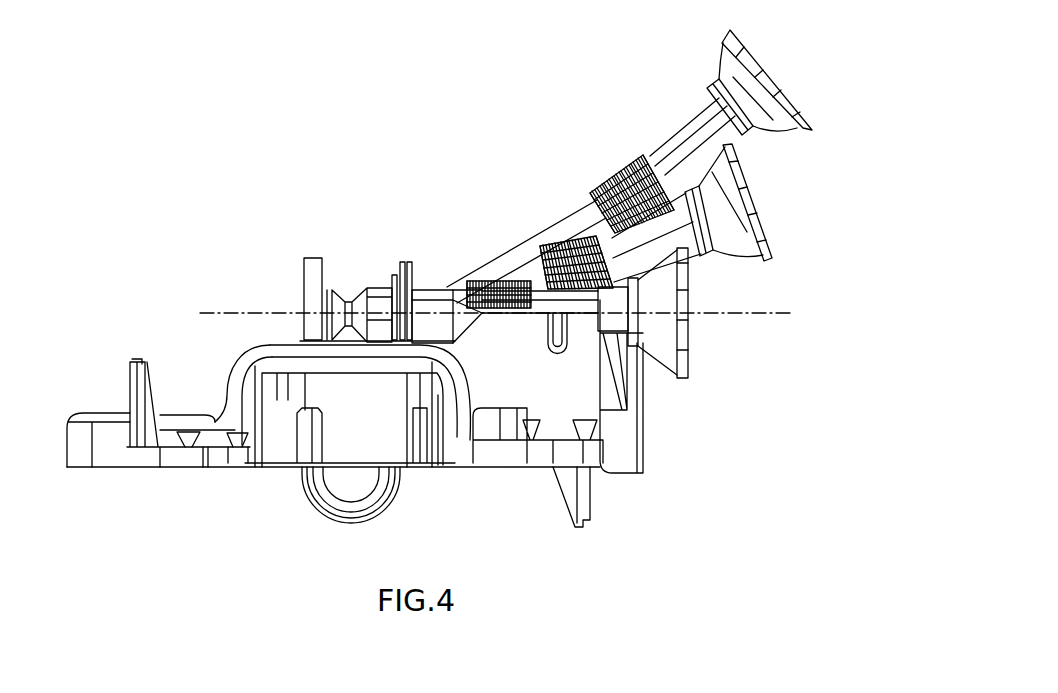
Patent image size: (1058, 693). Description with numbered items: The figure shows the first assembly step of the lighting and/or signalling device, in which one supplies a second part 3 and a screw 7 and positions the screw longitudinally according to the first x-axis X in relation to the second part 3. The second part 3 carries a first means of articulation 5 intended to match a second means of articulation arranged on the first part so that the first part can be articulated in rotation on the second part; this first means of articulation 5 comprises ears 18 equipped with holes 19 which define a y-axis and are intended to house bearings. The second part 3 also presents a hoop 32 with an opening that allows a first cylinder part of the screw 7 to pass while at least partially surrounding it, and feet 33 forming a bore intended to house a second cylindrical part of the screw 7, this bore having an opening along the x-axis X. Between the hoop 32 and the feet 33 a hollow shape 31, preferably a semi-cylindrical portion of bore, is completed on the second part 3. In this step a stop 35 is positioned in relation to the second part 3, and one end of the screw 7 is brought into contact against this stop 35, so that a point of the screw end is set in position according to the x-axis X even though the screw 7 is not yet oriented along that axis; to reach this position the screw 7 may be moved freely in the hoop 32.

The second part 3 is at (155, 470).
The first means of articulation 5 is at (359, 514).
The screw 7 is at (604, 204).
The ears 18 is at (397, 478).
The holes 19 is at (343, 493).
The hollow shape 31 is at (504, 343).
The hoop 32 is at (388, 268).
The feet 33 is at (585, 332).
The stop 35 is at (303, 296).
The x-axis X is at (745, 315).